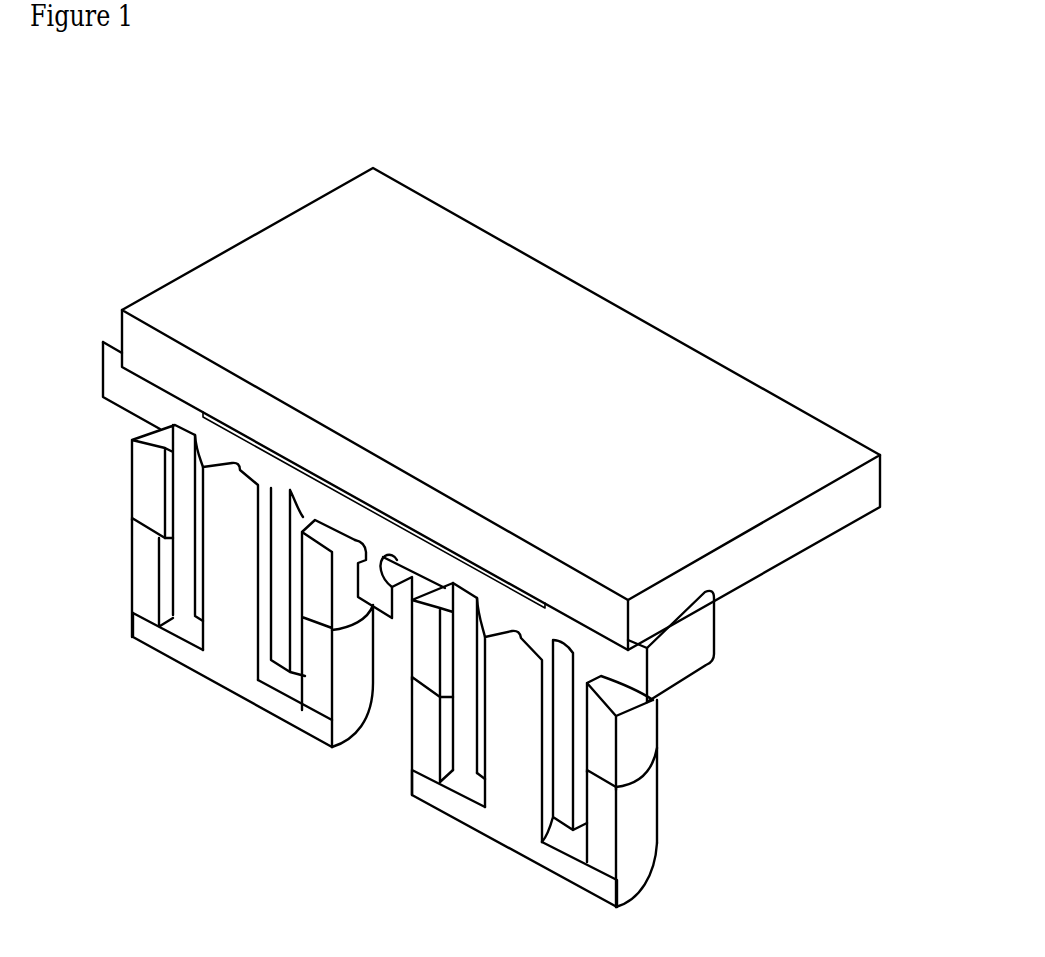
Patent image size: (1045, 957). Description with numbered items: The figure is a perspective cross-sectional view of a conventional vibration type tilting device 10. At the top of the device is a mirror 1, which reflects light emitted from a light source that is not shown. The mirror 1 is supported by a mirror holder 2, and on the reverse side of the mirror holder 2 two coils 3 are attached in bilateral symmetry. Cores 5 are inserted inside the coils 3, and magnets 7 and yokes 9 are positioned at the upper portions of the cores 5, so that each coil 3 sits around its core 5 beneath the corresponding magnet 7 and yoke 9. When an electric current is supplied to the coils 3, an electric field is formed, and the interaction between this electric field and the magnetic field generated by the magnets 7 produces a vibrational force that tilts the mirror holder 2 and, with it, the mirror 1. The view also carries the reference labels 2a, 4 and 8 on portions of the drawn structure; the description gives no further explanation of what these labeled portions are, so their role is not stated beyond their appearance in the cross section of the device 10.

The connector 10 is at (665, 197).
The mirror 1 is at (740, 402).
The mirror holder 2 is at (695, 657).
The hole in base 2a is at (380, 610).
The coils 3 is at (280, 660).
The housing 4 is at (873, 440).
The cores 5 is at (230, 633).
The magnets 7 is at (142, 571).
The terminal assembly 8 is at (188, 680).
The yokes 9 is at (148, 471).